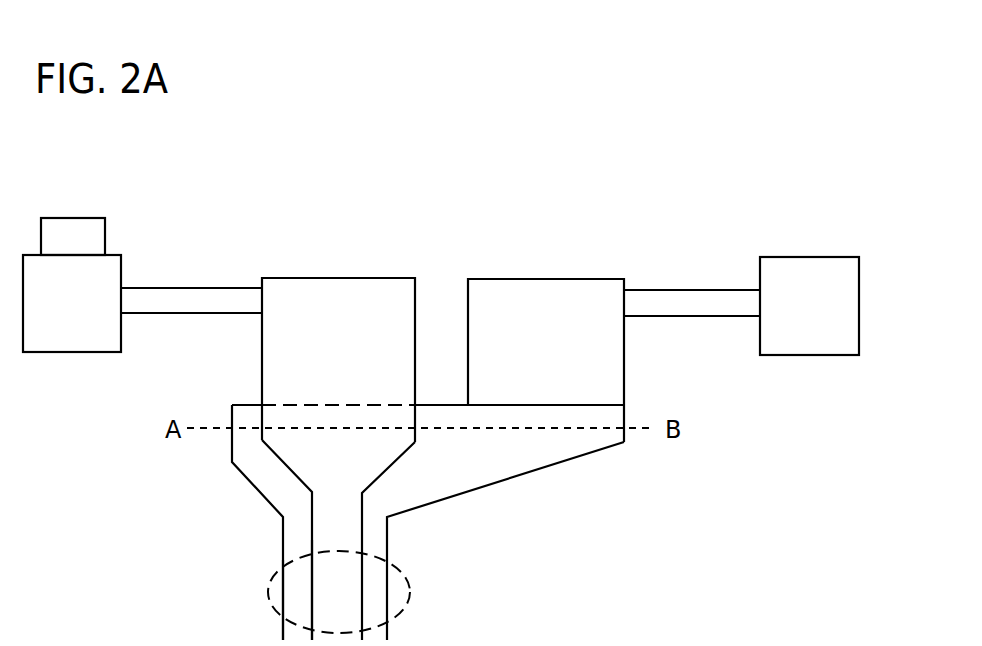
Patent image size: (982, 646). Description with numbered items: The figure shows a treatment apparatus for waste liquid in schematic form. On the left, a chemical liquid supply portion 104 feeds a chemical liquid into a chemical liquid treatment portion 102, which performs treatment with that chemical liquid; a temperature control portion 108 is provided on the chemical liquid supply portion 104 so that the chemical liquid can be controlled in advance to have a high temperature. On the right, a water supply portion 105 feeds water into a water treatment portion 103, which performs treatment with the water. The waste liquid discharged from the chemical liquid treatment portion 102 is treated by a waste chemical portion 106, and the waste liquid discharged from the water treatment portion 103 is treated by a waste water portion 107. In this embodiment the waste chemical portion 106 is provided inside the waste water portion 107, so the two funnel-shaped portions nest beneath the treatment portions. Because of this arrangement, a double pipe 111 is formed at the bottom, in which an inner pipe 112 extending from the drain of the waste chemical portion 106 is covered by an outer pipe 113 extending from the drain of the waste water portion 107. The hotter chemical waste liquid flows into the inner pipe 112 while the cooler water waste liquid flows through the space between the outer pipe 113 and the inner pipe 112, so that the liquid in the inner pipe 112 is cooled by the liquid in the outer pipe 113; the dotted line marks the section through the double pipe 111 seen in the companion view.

The chemical liquid treatment portion 102 is at (338, 360).
The water treatment portion 103 is at (519, 360).
The chemical liquid supply portion 104 is at (113, 295).
The water supply portion 105 is at (795, 295).
The waste chemical portion 106 is at (297, 458).
The waste water portion 107 is at (518, 465).
The temperature control portion 108 is at (63, 242).
The double pipe 111 is at (365, 592).
The inner pipe 112 is at (313, 565).
The outer pipe 113 is at (300, 608).